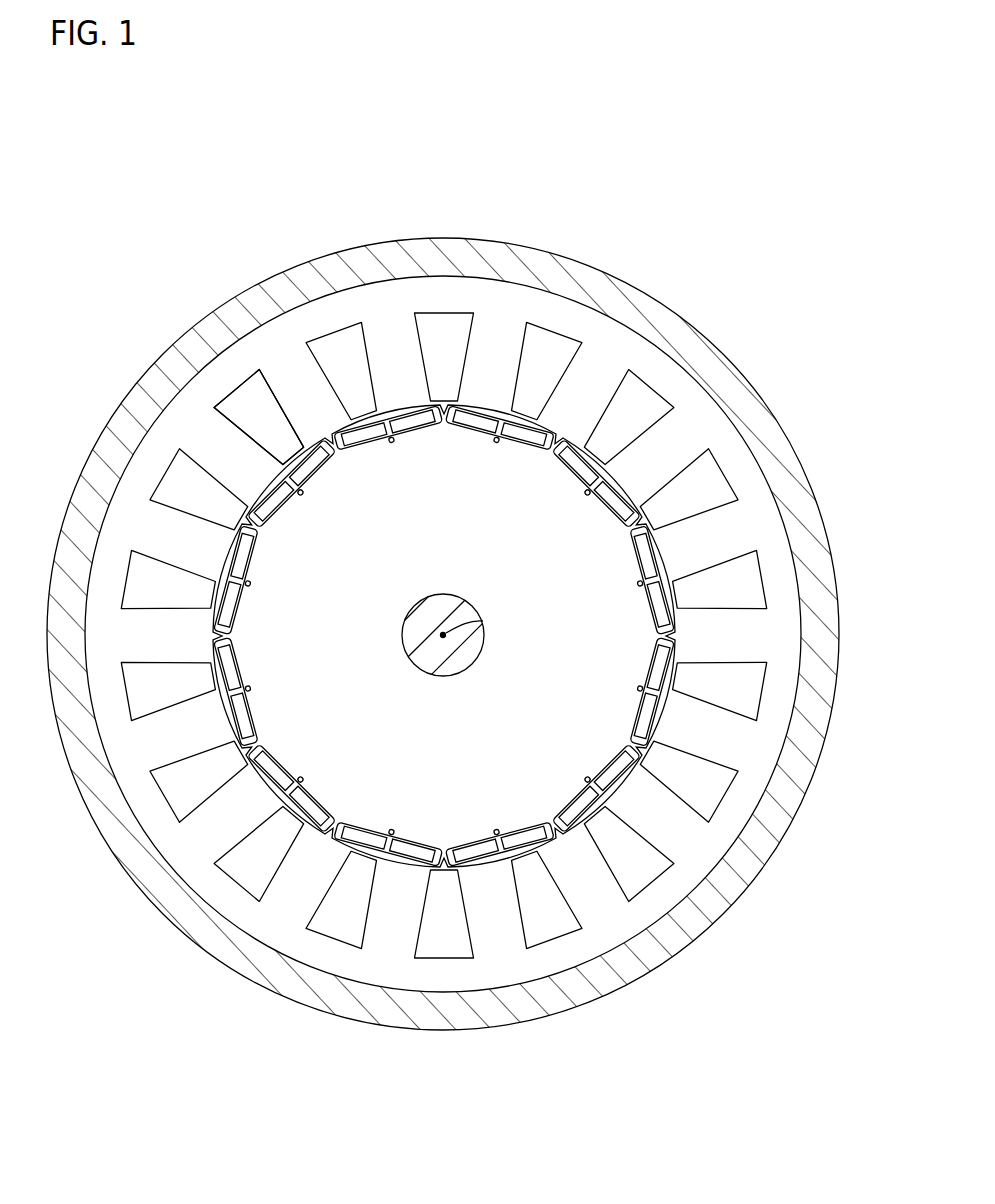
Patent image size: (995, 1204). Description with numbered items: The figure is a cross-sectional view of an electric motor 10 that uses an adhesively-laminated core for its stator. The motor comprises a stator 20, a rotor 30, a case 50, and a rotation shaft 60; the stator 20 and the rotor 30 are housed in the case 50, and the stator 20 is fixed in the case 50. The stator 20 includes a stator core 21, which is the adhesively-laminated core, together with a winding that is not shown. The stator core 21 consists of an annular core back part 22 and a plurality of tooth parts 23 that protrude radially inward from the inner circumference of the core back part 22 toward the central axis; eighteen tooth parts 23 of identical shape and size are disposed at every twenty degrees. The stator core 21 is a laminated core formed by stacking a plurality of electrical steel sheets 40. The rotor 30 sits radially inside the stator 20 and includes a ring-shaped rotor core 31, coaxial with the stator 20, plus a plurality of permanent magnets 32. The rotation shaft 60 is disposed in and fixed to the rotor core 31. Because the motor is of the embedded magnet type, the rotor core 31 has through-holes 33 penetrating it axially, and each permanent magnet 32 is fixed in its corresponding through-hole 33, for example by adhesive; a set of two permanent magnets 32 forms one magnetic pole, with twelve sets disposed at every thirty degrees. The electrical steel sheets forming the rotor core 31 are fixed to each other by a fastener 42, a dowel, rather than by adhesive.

The electric motor 10 is at (732, 146).
The stator 20 is at (718, 391).
The stator core 21 is at (658, 202).
The core back part 22 is at (628, 340).
The tooth parts 23 is at (577, 367).
The rotor 30 is at (392, 635).
The rotor core 31 is at (363, 727).
The permanent magnets 32 is at (523, 442).
The through-holes 33 is at (538, 832).
The electrical steel sheets 40 is at (237, 362).
The fastener 42 is at (308, 497).
The case 50 is at (768, 432).
The rotation shaft 60 is at (475, 648).